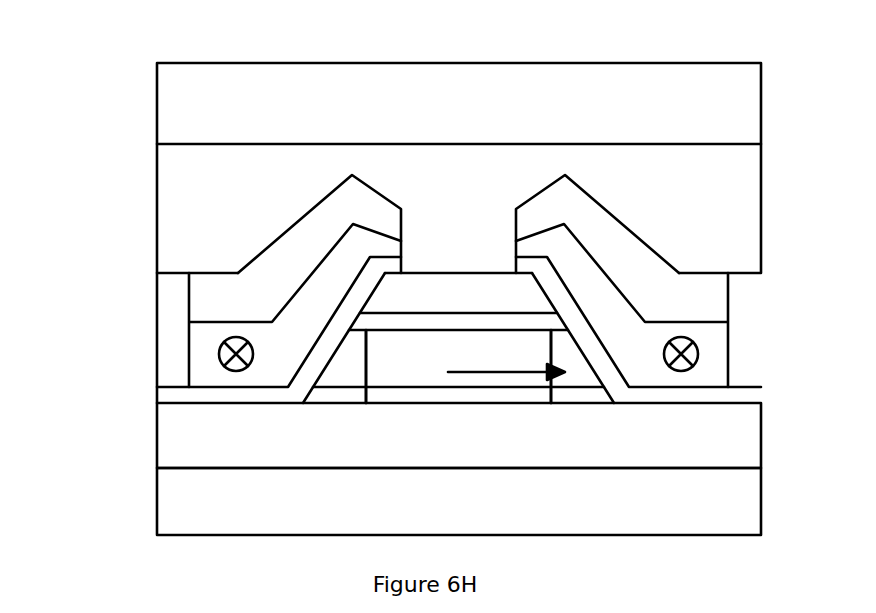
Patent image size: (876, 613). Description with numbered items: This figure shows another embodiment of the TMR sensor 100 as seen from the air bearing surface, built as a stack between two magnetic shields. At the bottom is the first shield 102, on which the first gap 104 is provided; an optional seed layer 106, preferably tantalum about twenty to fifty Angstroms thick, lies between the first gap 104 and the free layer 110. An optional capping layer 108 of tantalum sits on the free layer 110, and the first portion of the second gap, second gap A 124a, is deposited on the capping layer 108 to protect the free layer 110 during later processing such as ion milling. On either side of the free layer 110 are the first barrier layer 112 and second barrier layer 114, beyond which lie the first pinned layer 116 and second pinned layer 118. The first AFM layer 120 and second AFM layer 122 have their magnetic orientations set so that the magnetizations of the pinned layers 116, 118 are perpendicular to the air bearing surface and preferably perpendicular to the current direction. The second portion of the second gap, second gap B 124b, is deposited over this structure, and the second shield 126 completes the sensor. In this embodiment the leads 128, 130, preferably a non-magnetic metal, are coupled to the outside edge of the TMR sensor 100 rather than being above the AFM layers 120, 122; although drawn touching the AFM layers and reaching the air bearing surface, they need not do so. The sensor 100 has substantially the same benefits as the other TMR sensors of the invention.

The TMR sensor 100 is at (92, 388).
The first shield 102 is at (762, 487).
The first gap 104 is at (157, 452).
The seed layer 106 is at (514, 395).
The capping layer 108 is at (367, 395).
The free layer 110 is at (582, 395).
The first barrier layer 112 is at (157, 395).
The second barrier layer 114 is at (762, 393).
The first pinned layer 116 is at (189, 372).
The second pinned layer 118 is at (728, 370).
The first antiferromagnetic (AFM) layer 120 is at (215, 272).
The second AFM layer 122 is at (712, 273).
The second gap A (gap 2a) 124a is at (650, 40).
The second gap B (gap 2b) 124b is at (762, 192).
The second shield 126 is at (157, 120).
The lead 128 is at (157, 307).
The lead 130 is at (762, 322).